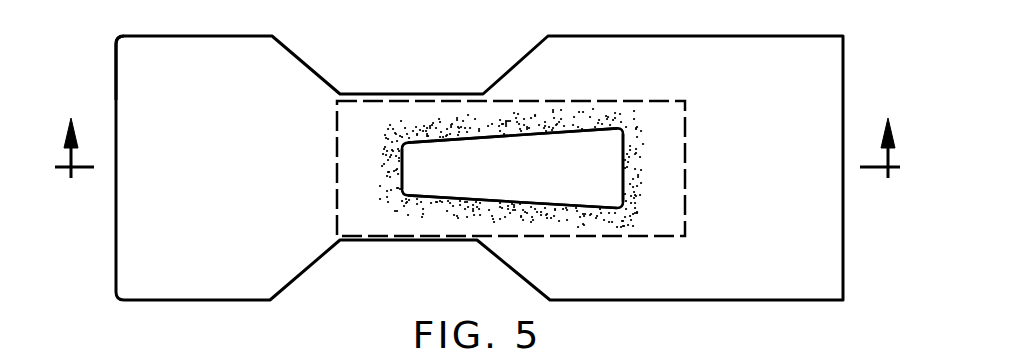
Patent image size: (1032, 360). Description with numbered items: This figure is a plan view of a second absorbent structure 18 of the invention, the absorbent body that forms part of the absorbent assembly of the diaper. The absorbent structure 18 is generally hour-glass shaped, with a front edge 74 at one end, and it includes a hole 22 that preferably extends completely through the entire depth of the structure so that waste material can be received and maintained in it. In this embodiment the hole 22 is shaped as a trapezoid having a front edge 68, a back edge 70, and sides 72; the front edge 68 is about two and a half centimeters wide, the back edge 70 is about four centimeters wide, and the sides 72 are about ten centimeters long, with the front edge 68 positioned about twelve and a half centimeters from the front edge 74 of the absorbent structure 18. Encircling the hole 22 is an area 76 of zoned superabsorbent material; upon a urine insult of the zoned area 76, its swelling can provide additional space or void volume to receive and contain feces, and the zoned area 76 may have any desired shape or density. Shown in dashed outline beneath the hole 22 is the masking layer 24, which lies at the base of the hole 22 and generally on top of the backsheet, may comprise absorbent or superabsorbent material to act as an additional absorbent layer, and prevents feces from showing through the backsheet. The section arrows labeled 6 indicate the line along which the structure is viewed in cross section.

The absorbent structure 18 is at (803, 55).
The hole 22 is at (604, 159).
The masking layer 24 is at (687, 205).
The front edge 68 is at (404, 170).
The back edge 70 is at (620, 170).
The sides 72 is at (453, 142).
The front edge 74 is at (115, 93).
The area of zoned superabsorbent material 76 is at (629, 106).
The section line 6- 6 is at (477, 168).